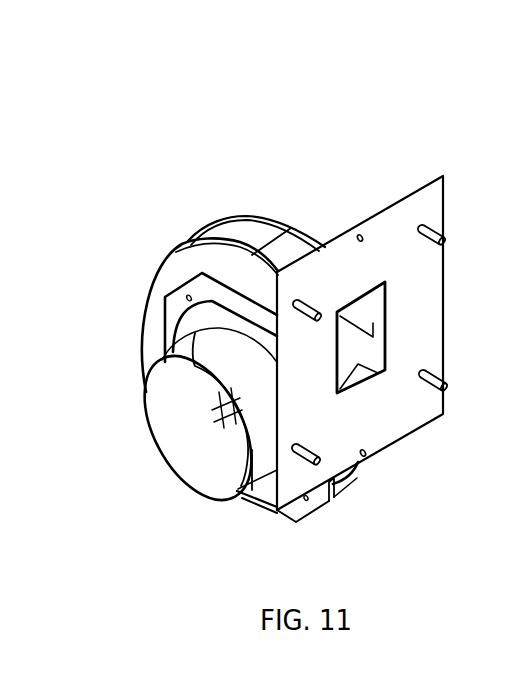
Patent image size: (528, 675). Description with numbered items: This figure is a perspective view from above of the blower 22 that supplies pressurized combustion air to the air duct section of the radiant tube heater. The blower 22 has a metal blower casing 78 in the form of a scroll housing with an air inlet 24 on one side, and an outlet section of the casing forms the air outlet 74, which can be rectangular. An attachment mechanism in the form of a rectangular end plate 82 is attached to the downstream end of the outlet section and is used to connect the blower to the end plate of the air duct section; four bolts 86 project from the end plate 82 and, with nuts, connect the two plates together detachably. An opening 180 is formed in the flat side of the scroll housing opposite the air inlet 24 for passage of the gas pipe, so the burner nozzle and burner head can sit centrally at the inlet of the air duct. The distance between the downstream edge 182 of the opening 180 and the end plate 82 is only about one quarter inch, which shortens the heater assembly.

The blower 22 is at (343, 148).
The air inlet 24 is at (210, 457).
The air outlet 74 is at (372, 346).
The blower casing 78 is at (170, 250).
The end plate 82 is at (412, 239).
The bolts 86 is at (312, 464).
The opening 180 is at (363, 307).
The downstream edge 182 is at (377, 338).